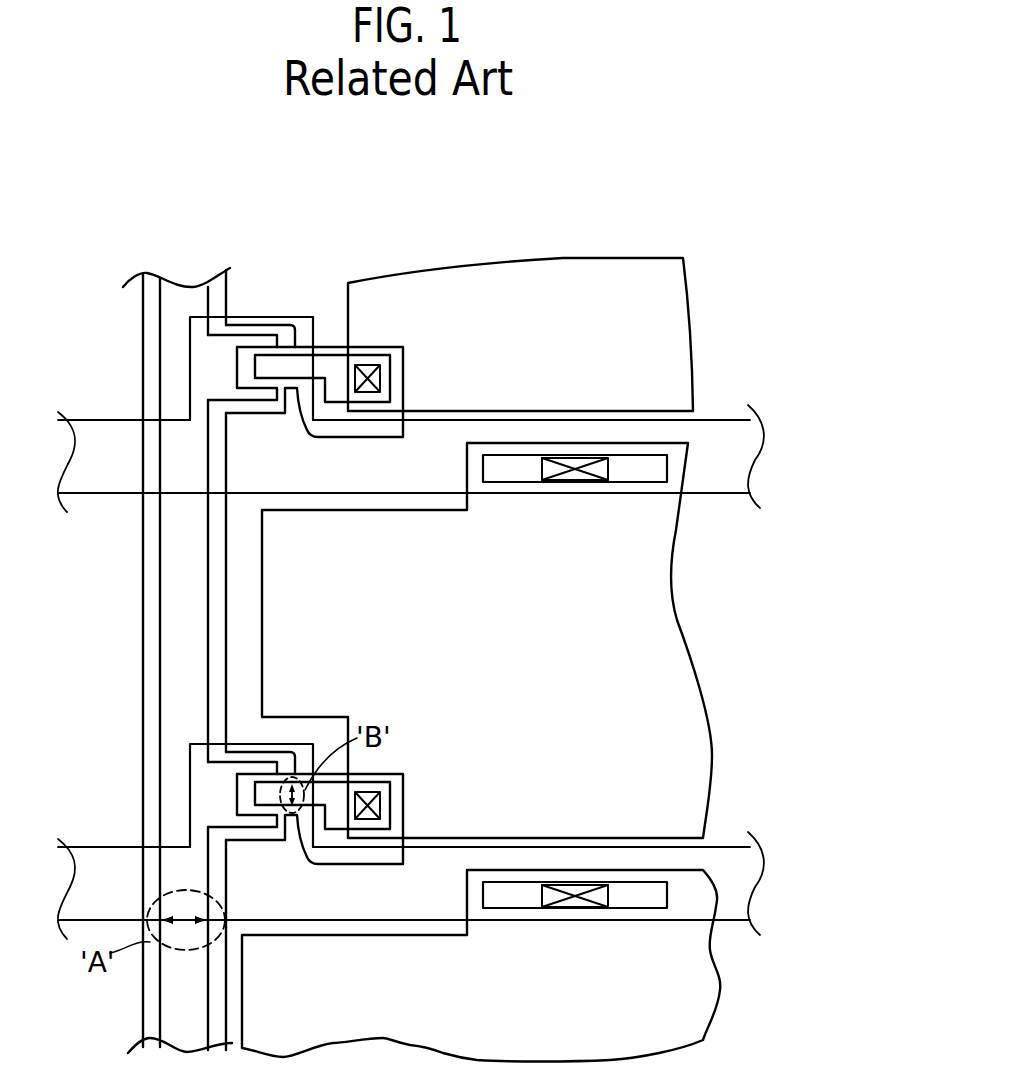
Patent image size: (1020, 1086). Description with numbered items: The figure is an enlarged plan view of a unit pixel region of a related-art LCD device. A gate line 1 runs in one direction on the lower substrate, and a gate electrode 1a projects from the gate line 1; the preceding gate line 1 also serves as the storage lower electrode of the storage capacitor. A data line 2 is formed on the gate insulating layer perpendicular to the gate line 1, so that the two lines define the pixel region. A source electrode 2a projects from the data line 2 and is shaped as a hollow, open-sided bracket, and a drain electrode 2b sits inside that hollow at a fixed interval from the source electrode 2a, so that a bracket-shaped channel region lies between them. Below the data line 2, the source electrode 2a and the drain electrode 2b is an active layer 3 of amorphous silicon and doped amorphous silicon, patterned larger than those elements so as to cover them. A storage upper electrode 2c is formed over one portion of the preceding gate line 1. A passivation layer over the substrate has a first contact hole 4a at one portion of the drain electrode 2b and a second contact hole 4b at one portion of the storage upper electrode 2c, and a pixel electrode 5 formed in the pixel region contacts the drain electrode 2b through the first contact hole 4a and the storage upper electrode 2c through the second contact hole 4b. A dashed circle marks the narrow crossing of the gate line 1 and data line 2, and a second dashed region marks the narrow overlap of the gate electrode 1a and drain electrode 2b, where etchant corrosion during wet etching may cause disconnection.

The gate line 1 is at (298, 923).
The gate electrode 1a is at (190, 768).
The data line 2 is at (210, 565).
The source electrode 2a is at (260, 767).
The drain electrode 2b is at (398, 822).
The storage upper electrode 2c is at (503, 483).
The active layer 3 is at (227, 875).
The first contact hole 4a is at (378, 805).
The second contact hole 4b is at (580, 462).
The pixel electrode 5 is at (677, 627).